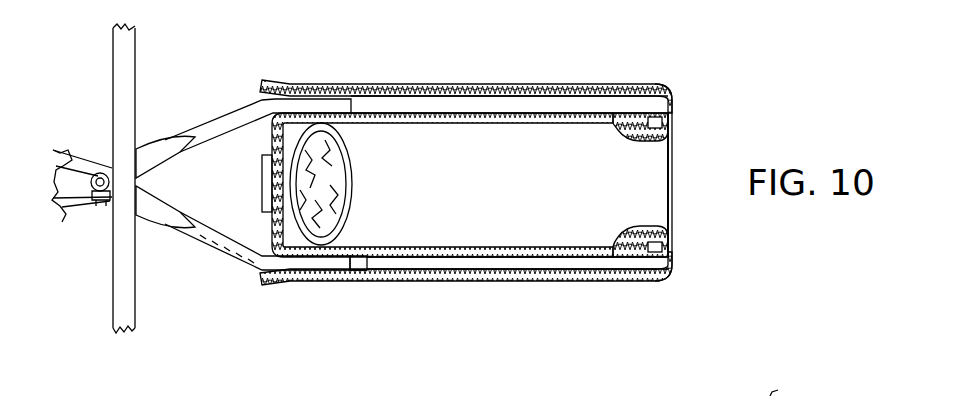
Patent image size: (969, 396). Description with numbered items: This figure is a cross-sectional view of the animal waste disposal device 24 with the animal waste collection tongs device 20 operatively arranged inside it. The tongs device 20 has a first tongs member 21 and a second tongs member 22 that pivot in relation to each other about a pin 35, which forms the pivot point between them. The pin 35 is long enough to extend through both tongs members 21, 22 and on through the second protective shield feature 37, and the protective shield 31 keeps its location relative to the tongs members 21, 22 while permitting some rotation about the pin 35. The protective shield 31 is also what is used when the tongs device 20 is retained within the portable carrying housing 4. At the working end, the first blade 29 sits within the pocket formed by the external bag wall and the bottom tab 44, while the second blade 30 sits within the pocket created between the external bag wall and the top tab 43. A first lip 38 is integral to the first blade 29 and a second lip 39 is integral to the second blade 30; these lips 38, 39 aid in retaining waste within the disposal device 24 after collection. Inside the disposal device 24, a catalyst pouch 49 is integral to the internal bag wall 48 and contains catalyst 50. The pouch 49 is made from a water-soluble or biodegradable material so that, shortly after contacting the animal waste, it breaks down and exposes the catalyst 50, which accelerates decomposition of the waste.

The animal waste collection tongs device 20 is at (97, 315).
The first tongs member 21 is at (66, 156).
The second tongs member 22 is at (70, 214).
The animal waste disposal device 24 is at (658, 77).
The first blade 29 is at (532, 262).
The second blade 30 is at (462, 107).
The protective shield 31 is at (137, 48).
The pin 35 is at (93, 200).
The second protective shield feature 37 is at (106, 164).
The first lip 38 is at (664, 249).
The second lip 39 is at (673, 119).
The top tab 43 is at (283, 86).
The bottom tab 44 is at (282, 283).
The internal bag wall 48 is at (594, 240).
The catalyst pouch 49 is at (352, 203).
The catalyst 50 is at (365, 268).
The portable carrying housing 4 is at (785, 387).